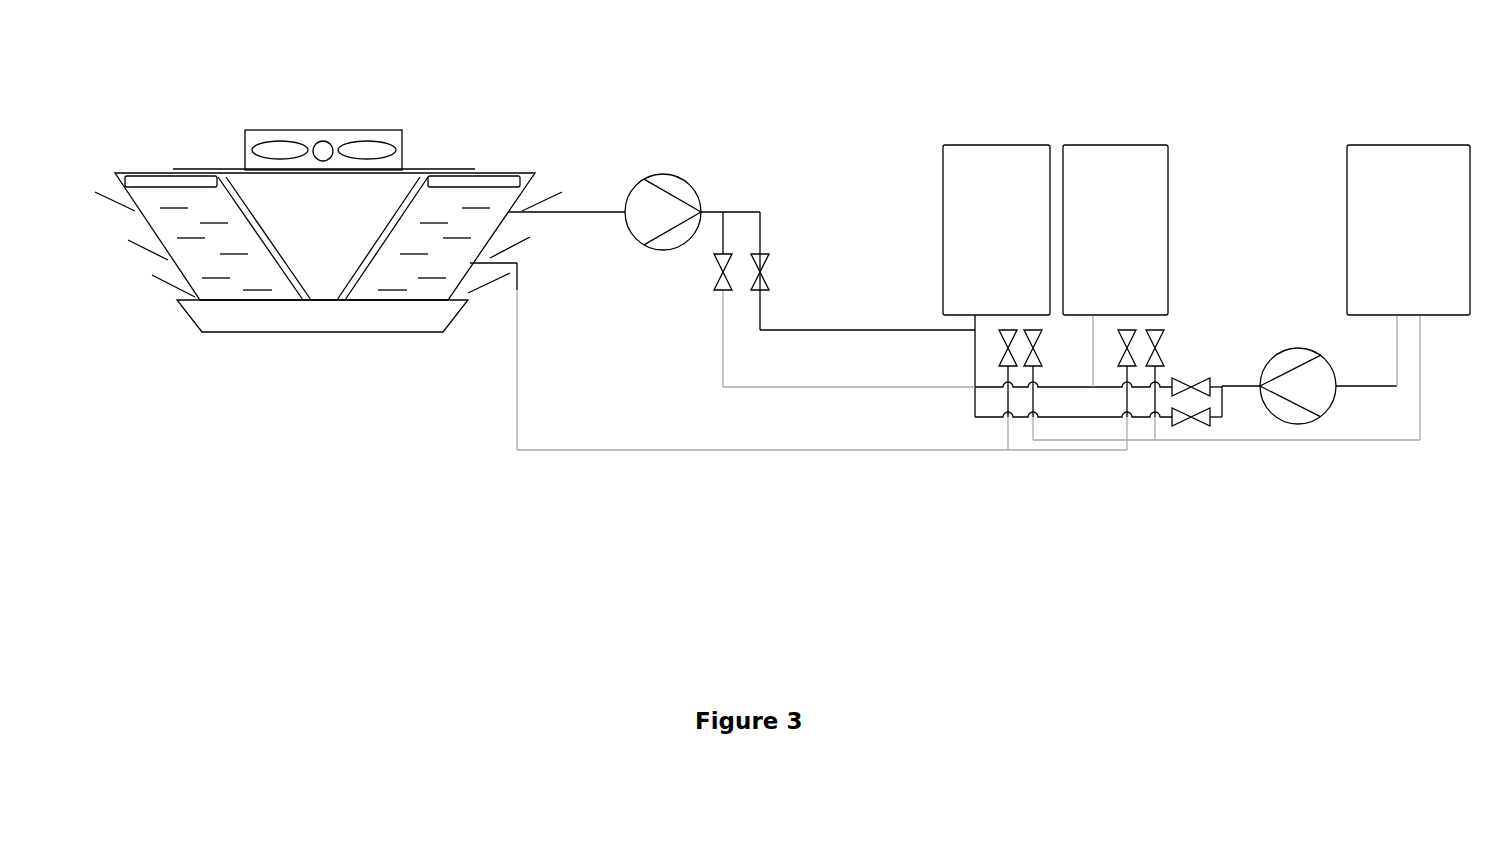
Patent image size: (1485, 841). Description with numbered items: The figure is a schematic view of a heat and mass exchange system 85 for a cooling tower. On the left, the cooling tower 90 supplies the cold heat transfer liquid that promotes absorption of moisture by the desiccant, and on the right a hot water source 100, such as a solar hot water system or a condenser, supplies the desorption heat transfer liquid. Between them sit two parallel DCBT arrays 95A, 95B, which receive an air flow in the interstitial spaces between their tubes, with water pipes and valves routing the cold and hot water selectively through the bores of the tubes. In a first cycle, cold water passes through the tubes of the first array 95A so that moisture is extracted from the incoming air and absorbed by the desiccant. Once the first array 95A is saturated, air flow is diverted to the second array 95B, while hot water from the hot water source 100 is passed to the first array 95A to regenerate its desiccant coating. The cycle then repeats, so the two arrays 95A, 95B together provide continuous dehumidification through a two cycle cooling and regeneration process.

The heat and mass exchange system 85 is at (243, 654).
The cooling tower 90 is at (212, 111).
The first array 95A is at (937, 138).
The second array 95B is at (1058, 138).
The hot water source 100 is at (1333, 141).